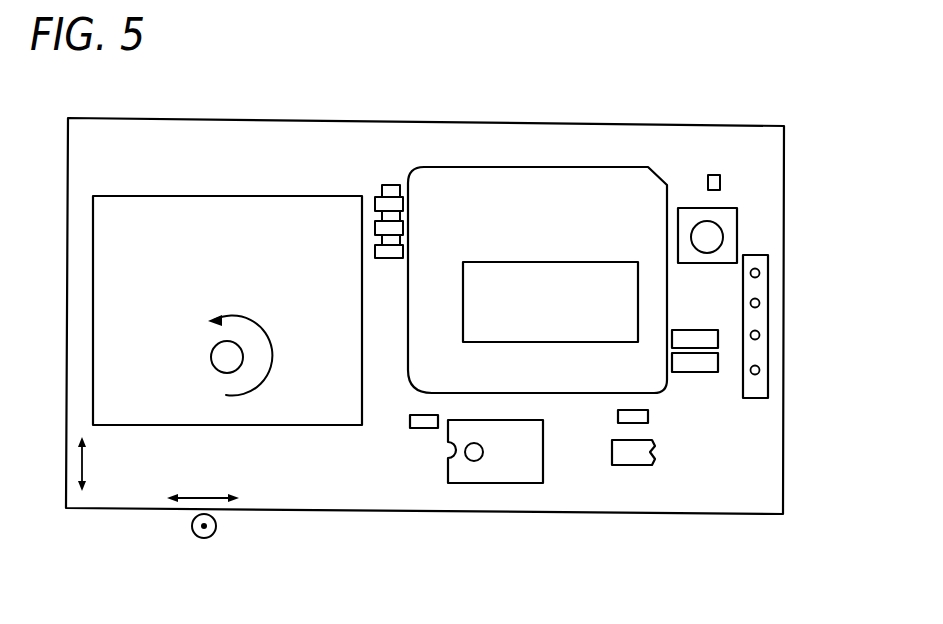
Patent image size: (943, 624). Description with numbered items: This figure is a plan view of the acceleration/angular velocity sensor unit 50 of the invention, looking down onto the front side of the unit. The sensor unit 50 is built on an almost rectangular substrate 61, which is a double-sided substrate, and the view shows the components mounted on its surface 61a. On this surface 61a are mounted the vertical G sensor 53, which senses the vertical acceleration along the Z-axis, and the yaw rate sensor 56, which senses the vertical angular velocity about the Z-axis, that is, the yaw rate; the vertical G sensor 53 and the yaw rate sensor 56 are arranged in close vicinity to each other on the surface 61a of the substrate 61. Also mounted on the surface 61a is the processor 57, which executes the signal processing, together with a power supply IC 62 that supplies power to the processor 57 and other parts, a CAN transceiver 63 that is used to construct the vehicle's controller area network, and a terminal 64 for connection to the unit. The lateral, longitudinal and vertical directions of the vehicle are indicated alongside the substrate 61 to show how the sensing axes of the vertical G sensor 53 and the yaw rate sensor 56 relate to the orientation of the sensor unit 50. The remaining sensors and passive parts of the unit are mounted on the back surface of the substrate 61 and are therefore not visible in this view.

The sensor unit 50 is at (698, 88).
The vertical G sensor 53 is at (500, 485).
The yaw rate sensor 56 is at (228, 196).
The processor 57 is at (508, 167).
The substrate 61 is at (374, 115).
The surface of the substrate 61a is at (432, 137).
The power supply IC 62 is at (727, 207).
The CAN transceiver 63 is at (636, 467).
The terminal 64 is at (767, 382).